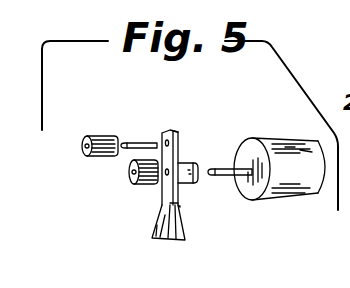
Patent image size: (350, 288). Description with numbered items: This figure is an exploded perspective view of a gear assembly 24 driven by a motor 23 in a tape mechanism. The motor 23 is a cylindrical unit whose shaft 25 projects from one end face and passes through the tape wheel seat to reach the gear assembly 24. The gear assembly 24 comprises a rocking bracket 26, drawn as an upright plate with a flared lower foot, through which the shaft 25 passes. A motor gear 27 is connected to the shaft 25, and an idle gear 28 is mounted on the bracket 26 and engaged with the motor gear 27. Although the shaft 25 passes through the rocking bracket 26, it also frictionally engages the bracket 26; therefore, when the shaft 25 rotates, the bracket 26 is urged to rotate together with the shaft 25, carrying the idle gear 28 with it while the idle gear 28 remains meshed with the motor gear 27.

The motor 23 is at (288, 174).
The gear assembly 24 is at (193, 210).
The shaft 25 is at (226, 168).
The rocking bracket 26 is at (165, 204).
The motor gear 27 is at (130, 172).
The idle gear 28 is at (104, 135).